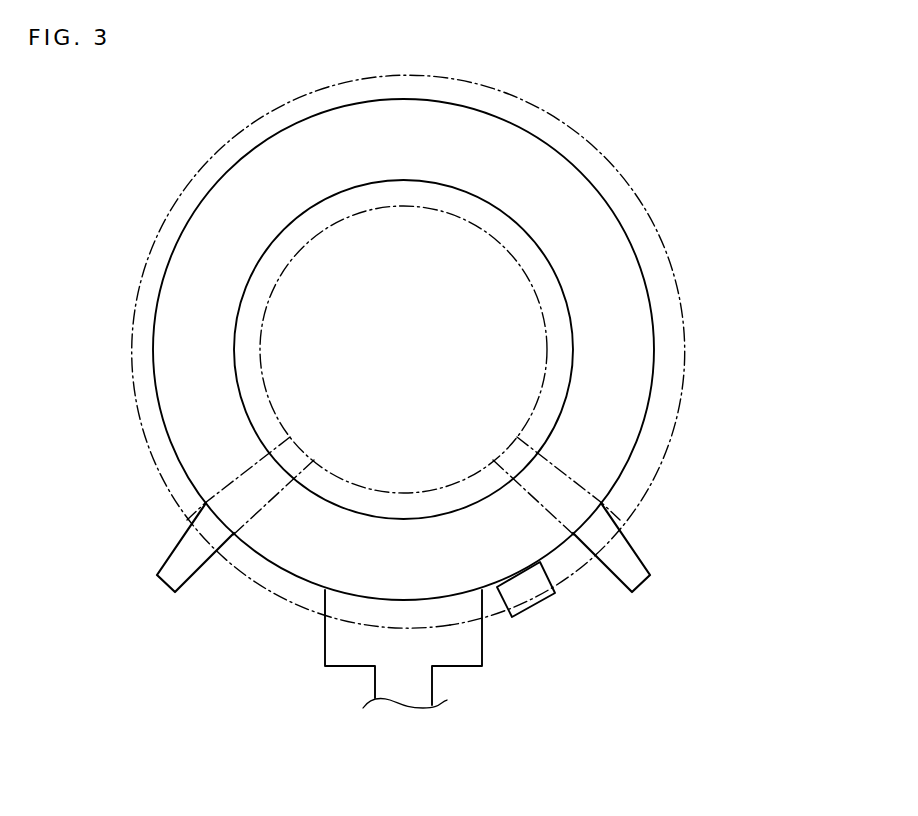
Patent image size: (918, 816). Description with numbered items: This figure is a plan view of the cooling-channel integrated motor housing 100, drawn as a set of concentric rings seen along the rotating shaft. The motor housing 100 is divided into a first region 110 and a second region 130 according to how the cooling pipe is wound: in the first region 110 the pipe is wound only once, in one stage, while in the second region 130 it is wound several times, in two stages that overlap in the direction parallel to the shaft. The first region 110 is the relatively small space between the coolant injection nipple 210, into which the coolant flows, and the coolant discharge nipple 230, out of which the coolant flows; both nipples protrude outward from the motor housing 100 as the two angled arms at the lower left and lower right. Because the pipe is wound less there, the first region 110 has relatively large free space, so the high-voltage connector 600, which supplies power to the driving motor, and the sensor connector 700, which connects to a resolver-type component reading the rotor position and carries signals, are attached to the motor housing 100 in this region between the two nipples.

The motor housing 100 is at (650, 303).
The first region 110 is at (262, 590).
The second region 130 is at (668, 433).
The coolant injection nipple 210 is at (633, 557).
The coolant discharge nipple 230 is at (168, 558).
The high-voltage connector 600 is at (425, 686).
The sensor connector 700 is at (538, 605).